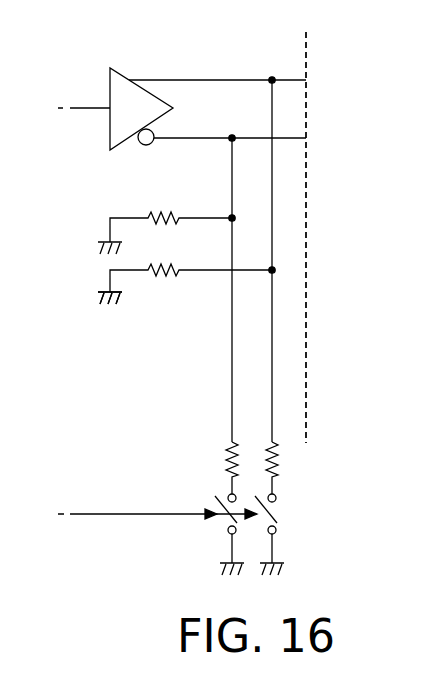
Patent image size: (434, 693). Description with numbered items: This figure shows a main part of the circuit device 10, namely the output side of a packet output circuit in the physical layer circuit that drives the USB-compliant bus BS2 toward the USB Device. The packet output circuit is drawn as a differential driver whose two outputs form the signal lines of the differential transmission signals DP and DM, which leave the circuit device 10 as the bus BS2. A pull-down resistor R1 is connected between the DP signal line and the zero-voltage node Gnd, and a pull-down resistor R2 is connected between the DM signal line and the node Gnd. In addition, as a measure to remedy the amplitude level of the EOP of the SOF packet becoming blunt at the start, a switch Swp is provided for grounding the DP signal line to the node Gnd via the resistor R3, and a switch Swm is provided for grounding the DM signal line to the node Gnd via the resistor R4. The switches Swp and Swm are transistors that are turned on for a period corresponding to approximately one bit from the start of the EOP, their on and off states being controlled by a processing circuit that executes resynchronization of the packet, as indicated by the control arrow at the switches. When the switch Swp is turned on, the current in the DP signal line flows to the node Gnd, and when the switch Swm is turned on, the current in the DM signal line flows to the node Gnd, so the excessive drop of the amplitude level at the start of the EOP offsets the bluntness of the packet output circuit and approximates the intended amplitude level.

The circuit device 10 is at (306, 32).
The pull-down resistor R1 is at (186, 271).
The pull-down resistor R2 is at (166, 220).
The resistor R3 is at (291, 468).
The resistor R4 is at (211, 468).
The switch Swm is at (202, 534).
The switch Swp is at (294, 534).
The bus BS2 is at (221, 109).
The zero-voltage node Gnd is at (86, 296).